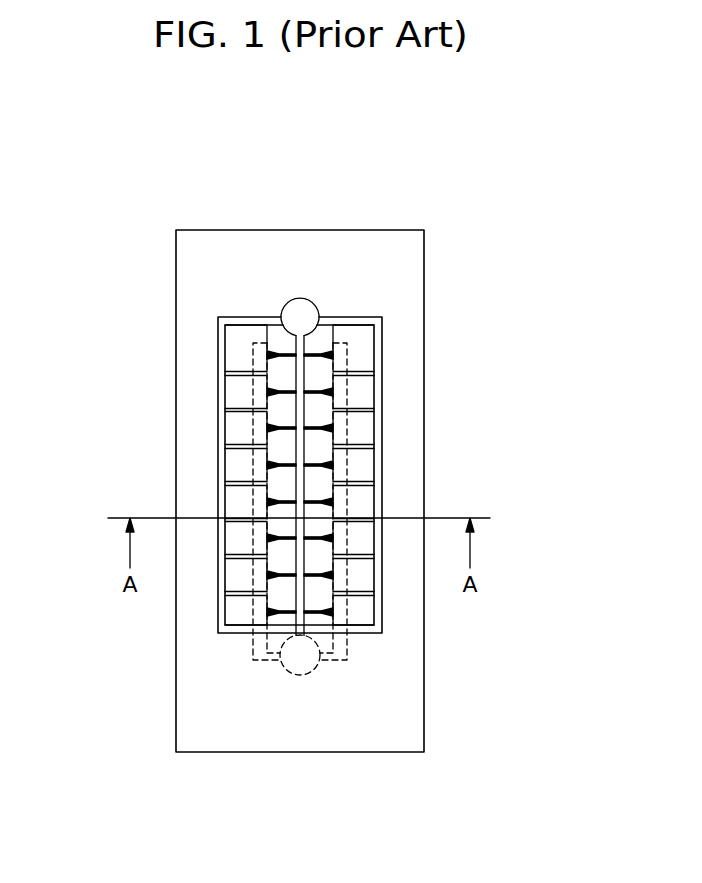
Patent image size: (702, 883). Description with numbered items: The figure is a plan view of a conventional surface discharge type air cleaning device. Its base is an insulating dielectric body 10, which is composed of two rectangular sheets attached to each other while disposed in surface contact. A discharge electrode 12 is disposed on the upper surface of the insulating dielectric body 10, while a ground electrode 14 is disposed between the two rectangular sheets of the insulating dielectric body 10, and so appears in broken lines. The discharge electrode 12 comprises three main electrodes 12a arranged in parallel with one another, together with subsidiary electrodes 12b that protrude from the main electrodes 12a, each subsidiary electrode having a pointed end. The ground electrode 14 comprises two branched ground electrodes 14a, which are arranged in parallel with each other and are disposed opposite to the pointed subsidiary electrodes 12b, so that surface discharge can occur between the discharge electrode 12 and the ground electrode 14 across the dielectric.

The insulating dielectric body 10 is at (208, 255).
The discharge electrode 12 is at (220, 335).
The main electrodes 12a is at (367, 628).
The subsidiary electrodes 12b is at (337, 446).
The ground electrode 14 is at (270, 660).
The branched ground electrodes 14a is at (258, 387).